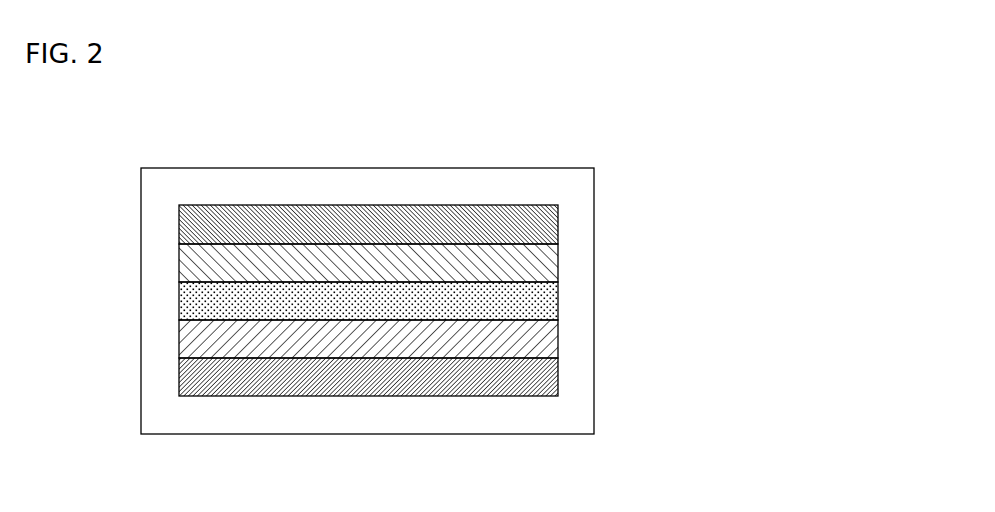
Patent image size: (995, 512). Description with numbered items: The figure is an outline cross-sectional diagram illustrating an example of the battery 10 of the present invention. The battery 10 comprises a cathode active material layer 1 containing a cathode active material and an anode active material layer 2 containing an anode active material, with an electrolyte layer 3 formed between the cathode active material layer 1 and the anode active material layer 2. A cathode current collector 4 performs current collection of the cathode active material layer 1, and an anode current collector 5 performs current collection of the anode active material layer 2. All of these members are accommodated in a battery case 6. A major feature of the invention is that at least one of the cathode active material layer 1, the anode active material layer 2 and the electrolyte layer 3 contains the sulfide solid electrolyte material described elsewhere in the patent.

The battery 10 is at (581, 128).
The battery case 6 is at (573, 181).
The cathode current collector 4 is at (558, 216).
The cathode active material layer 1 is at (547, 255).
The electrolyte layer 3 is at (545, 292).
The anode active material layer 2 is at (547, 331).
The anode current collector 5 is at (558, 367).